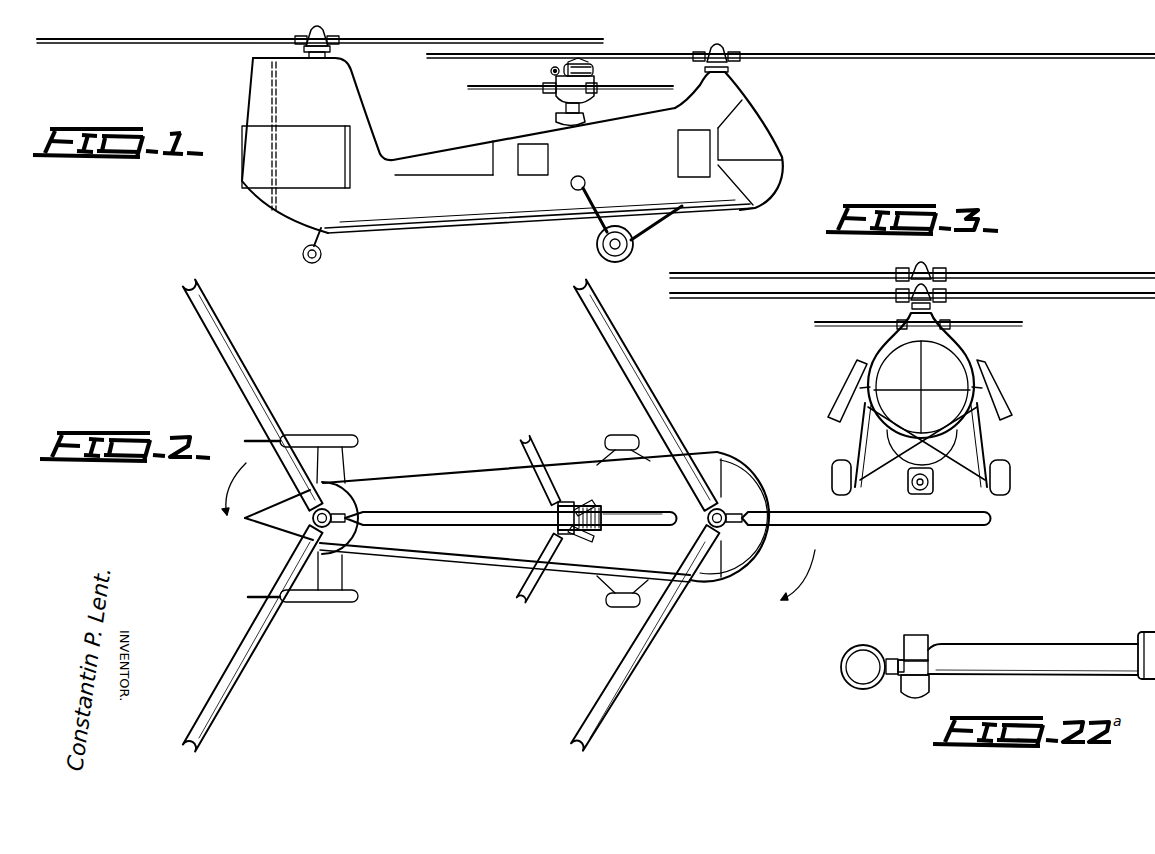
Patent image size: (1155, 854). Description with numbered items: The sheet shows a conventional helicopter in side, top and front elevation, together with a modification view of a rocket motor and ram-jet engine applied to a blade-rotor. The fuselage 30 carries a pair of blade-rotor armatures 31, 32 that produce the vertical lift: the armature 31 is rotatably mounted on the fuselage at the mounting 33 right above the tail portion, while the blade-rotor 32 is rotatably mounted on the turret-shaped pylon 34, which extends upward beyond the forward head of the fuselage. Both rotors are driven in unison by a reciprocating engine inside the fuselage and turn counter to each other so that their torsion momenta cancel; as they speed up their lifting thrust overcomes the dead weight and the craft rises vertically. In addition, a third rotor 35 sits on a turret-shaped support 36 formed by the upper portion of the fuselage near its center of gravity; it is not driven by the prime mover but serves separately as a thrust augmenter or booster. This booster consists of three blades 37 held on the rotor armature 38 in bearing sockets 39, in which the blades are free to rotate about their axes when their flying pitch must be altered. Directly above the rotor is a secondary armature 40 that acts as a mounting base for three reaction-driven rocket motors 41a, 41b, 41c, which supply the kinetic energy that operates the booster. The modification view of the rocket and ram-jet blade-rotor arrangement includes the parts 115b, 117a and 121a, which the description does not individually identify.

In FIG. 1, the fuselage 30 is at (411, 248).
In FIG. 2, the fuselage 30 is at (443, 568).
In FIG. 3, the fuselage 30 is at (862, 350).
In FIG. 1, the blade-rotor armature 31 is at (240, 29).
In FIG. 2, the blade-rotor armature 31 is at (233, 377).
In FIG. 3, the blade-rotor armature 31 is at (1019, 273).
In FIG. 1, the blade-rotor 32 is at (765, 42).
In FIG. 2, the blade-rotor 32 is at (665, 396).
In FIG. 3, the blade-rotor 32 is at (1134, 307).
In FIG. 1, the rotor mounting 33 is at (350, 83).
In FIG. 2, the rotor mounting 33 is at (295, 532).
In FIG. 3, the rotor mounting 33 is at (930, 270).
In FIG. 1, the turret-shaped protrusion or pylon 34 is at (722, 87).
In FIG. 2, the turret-shaped protrusion or pylon 34 is at (714, 466).
In FIG. 3, the turret-shaped protrusion or pylon 34 is at (937, 315).
In FIG. 1, the third rotor 35 is at (478, 79).
In FIG. 2, the third rotor 35 is at (543, 436).
In FIG. 3, the third rotor 35 is at (833, 317).
In FIG. 1, the turret-shaped support 36 is at (562, 110).
In FIG. 2, the blades 37 is at (523, 445).
In FIG. 1, the rotor armature 38 is at (554, 80).
In FIG. 1, the bearing sockets 39 is at (592, 84).
In FIG. 1, the secondary armature 40 is at (574, 66).
In FIG. 2, the secondary armature 40 is at (582, 504).
In FIG. 2, the rocket motor 41a is at (556, 510).
In FIG. 22A, the rocket motor 41a is at (898, 644).
In FIG. 2, the rocket motor 41b is at (582, 532).
In FIG. 2, the rocket motor 41c is at (590, 507).
In FIG. 22A, the ring 115b is at (846, 684).
In FIG. 22A, the tube 117a is at (1037, 643).
In FIG. 22A, the end fitting 121a is at (1136, 632).